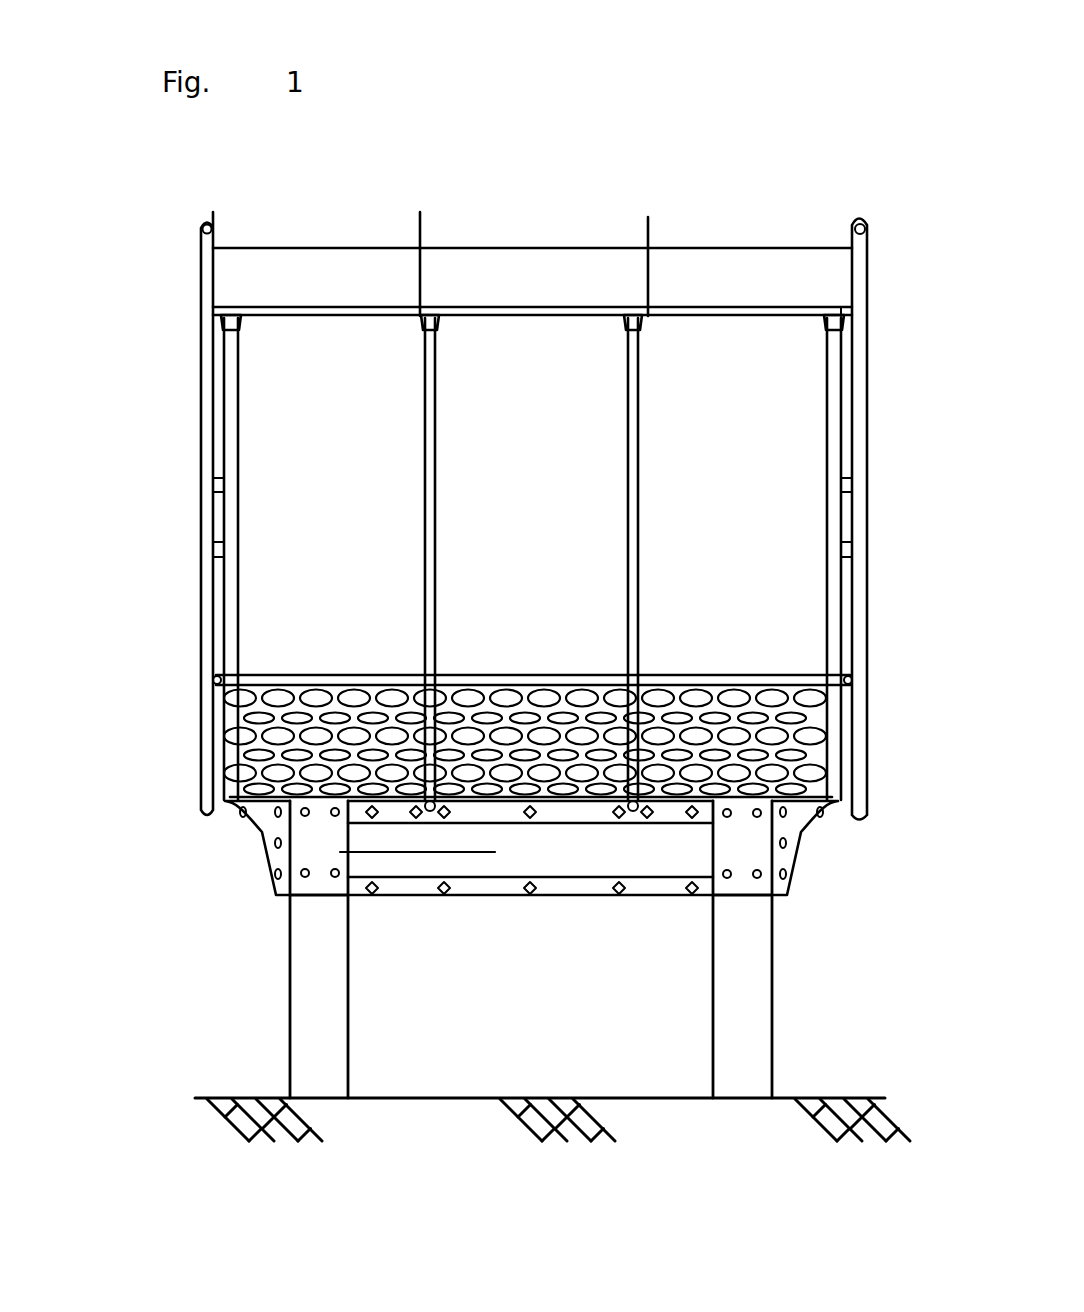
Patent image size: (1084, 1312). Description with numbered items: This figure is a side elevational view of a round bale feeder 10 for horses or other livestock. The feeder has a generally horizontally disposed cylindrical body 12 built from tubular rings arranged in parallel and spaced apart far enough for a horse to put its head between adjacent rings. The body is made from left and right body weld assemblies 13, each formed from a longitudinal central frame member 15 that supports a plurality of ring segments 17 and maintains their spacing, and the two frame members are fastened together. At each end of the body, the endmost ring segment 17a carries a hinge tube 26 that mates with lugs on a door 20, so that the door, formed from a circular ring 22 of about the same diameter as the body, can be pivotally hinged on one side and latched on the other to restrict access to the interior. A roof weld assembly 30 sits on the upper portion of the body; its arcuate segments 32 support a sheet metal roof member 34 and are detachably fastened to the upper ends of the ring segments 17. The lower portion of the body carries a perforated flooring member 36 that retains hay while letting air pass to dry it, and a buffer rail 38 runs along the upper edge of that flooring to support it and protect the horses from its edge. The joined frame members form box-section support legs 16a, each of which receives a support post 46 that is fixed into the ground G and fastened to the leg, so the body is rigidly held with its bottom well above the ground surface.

The round bale feeder 10 is at (637, 167).
The cylindrical body 12 is at (197, 356).
The body weld assembly 13 is at (252, 835).
The longitudinal central frame member 15 is at (480, 890).
The support leg 16a is at (728, 846).
The ring segment 17 is at (640, 510).
The endmost ring segment 17a is at (822, 435).
The door 20 is at (190, 592).
The circular ring 22 is at (200, 247).
The hinge tube 26 is at (840, 525).
The roof weld assembly 30 is at (606, 188).
The arcuate segment 32 is at (648, 222).
The roof member 34 is at (497, 246).
The perforated flooring member 36 is at (738, 690).
The buffer rail 38 is at (500, 670).
The support post 46 is at (755, 965).
The ground G is at (640, 1097).